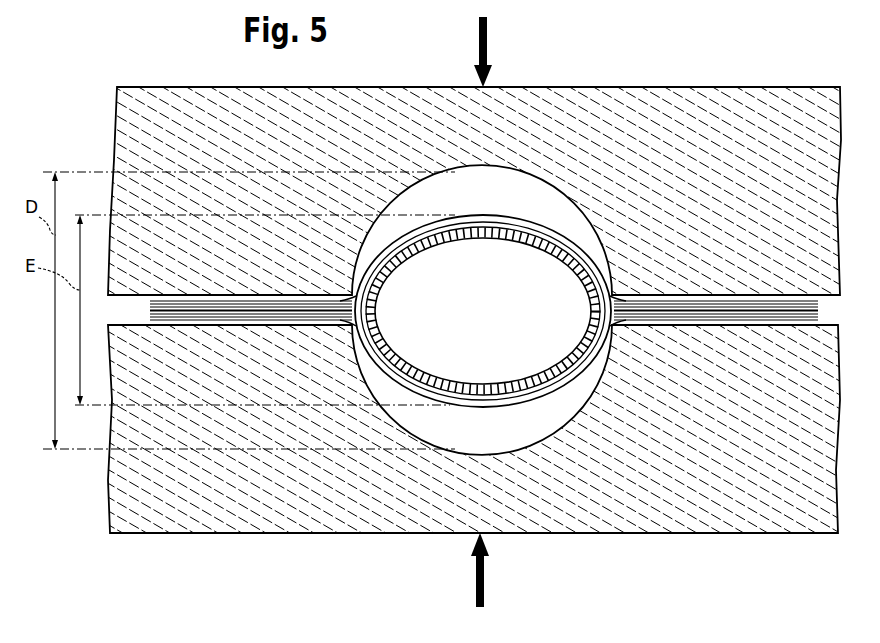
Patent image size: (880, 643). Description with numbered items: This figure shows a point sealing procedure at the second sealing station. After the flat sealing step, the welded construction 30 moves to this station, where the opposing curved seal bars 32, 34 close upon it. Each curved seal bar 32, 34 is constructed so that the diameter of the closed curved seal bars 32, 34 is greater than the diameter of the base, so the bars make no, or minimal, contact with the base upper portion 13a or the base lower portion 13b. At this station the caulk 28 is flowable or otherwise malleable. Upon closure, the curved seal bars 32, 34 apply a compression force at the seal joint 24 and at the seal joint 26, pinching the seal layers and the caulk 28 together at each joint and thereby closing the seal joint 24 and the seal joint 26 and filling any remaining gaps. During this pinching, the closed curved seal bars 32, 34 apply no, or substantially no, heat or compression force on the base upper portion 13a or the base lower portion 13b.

The curved seal bar 32 is at (176, 87).
The curved seal bar 34 is at (211, 533).
The caulk 28 is at (353, 293).
The seal joint 24 is at (353, 327).
The seal joint 26 is at (642, 327).
The welded construction 30 is at (527, 412).
The base upper portion 13a is at (495, 221).
The base lower portion 13b is at (490, 405).